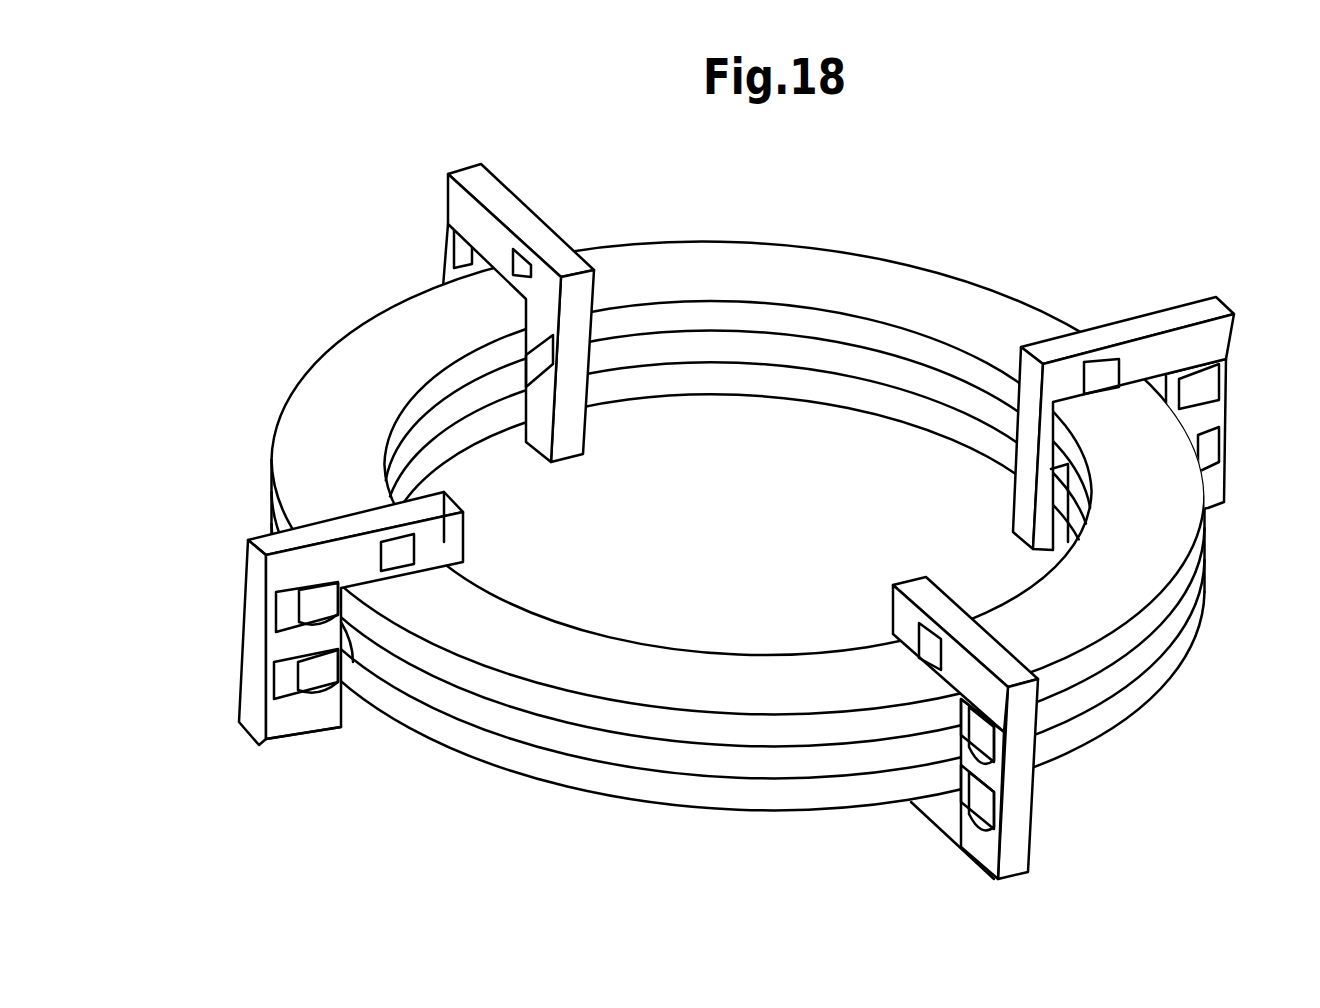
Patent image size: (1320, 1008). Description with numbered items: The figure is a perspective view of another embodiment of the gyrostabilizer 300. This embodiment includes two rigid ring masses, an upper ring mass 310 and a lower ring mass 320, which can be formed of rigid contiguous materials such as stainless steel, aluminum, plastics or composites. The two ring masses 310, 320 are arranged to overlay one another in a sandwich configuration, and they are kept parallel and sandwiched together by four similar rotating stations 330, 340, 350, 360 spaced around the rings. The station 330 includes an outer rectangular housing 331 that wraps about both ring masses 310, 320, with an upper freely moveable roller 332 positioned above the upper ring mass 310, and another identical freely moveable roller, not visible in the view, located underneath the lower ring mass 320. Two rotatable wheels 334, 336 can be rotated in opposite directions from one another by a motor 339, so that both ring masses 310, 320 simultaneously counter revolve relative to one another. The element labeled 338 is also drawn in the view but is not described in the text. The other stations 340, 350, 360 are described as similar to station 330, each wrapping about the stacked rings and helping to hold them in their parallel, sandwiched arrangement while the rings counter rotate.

The gyrostabilizer 300 is at (345, 235).
The upper ring mass 310 is at (843, 283).
The lower ring mass 320 is at (625, 783).
The rotating station 330 is at (272, 540).
The outer rectangular housing 331 is at (273, 578).
The upper freely moveable roller 332 is at (400, 548).
The rotatable wheel 334 is at (310, 598).
The rotatable wheel 336 is at (315, 677).
The ring segment 338 is at (352, 648).
The motor 339 is at (273, 665).
The rotating station 340 is at (497, 200).
The rotating station 350 is at (1153, 325).
The rotating station 360 is at (1020, 773).